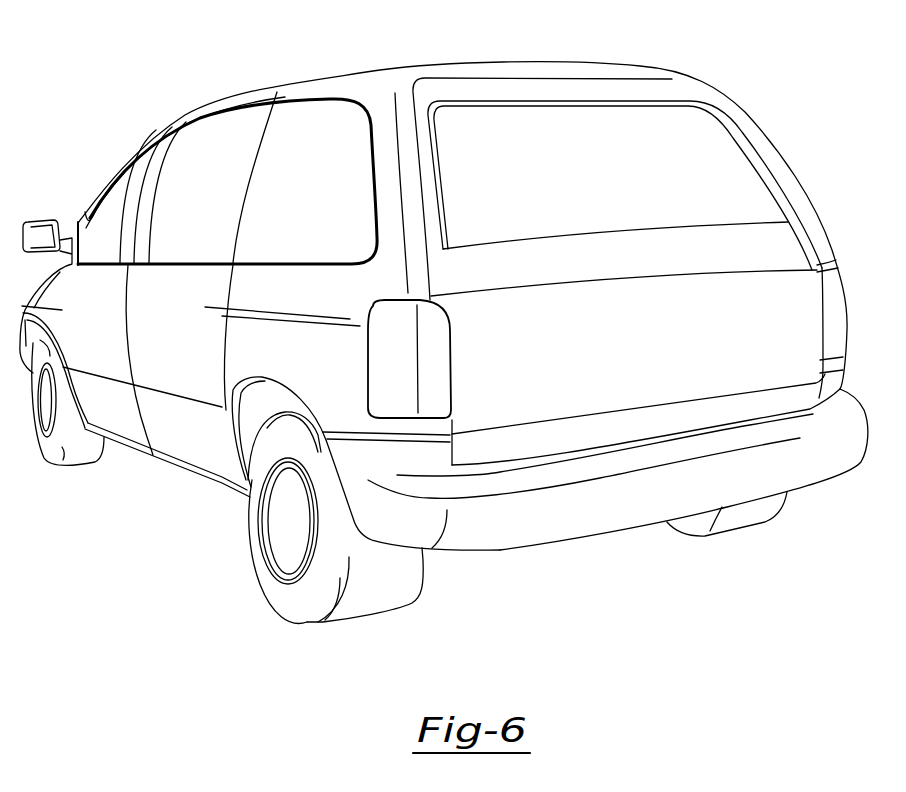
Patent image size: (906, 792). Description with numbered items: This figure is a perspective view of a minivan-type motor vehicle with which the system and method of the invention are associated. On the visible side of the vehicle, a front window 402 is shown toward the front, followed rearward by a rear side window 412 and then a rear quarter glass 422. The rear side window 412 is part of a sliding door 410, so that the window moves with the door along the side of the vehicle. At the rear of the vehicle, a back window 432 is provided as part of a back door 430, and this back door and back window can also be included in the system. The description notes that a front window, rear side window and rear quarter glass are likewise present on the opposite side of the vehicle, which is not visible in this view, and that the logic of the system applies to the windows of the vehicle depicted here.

The front window 402 is at (118, 203).
The sliding door 410 is at (188, 342).
The rear side window 412 is at (231, 131).
The rear quarter glass 422 is at (315, 123).
The back door 430 is at (656, 358).
The back window 432 is at (703, 168).